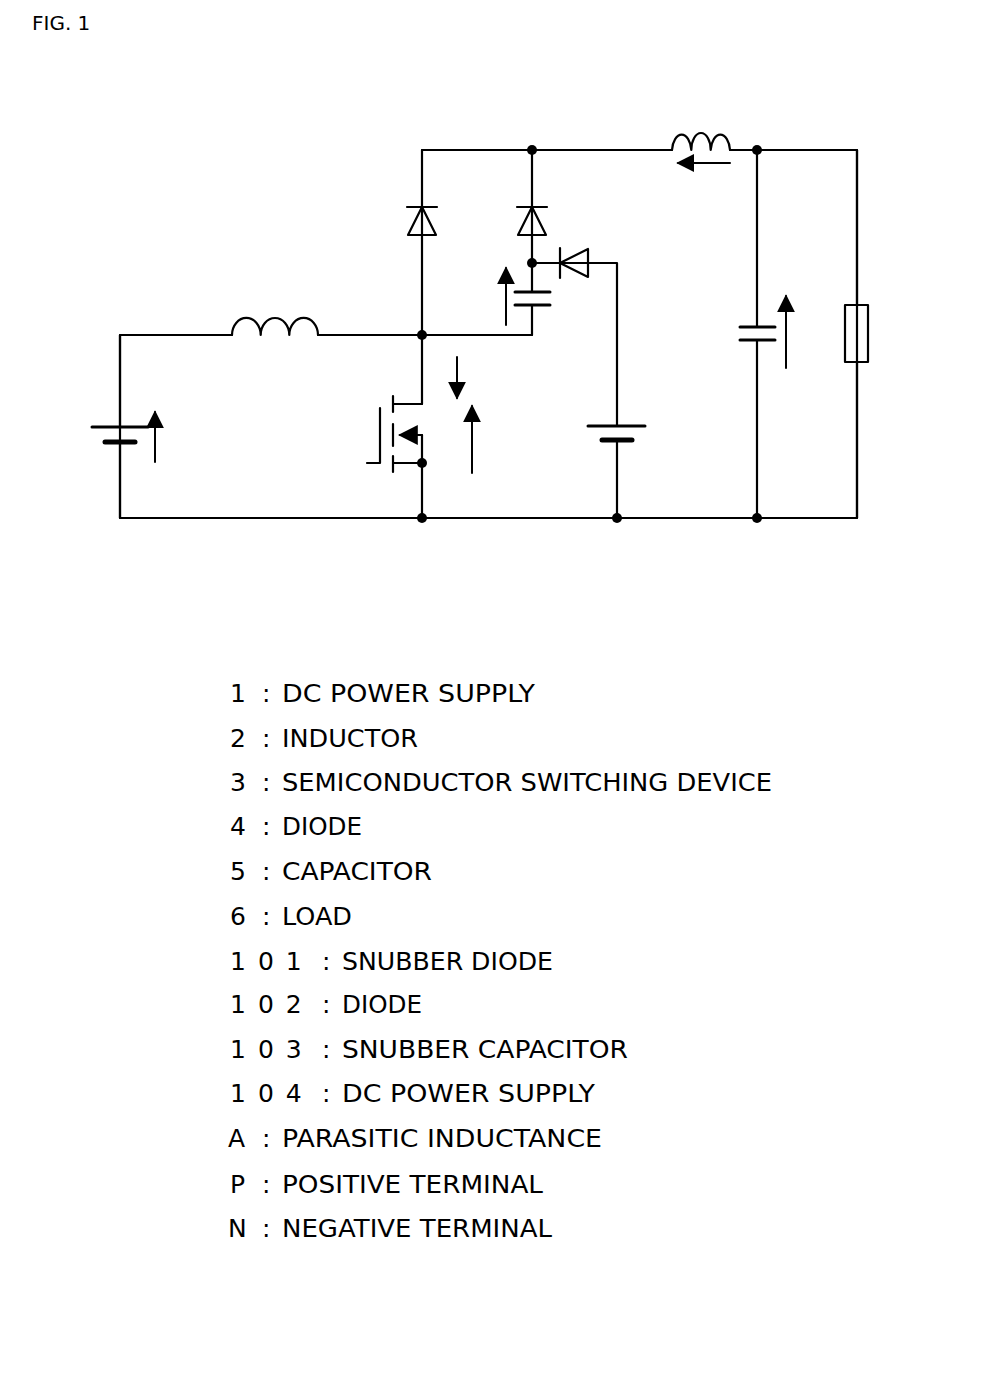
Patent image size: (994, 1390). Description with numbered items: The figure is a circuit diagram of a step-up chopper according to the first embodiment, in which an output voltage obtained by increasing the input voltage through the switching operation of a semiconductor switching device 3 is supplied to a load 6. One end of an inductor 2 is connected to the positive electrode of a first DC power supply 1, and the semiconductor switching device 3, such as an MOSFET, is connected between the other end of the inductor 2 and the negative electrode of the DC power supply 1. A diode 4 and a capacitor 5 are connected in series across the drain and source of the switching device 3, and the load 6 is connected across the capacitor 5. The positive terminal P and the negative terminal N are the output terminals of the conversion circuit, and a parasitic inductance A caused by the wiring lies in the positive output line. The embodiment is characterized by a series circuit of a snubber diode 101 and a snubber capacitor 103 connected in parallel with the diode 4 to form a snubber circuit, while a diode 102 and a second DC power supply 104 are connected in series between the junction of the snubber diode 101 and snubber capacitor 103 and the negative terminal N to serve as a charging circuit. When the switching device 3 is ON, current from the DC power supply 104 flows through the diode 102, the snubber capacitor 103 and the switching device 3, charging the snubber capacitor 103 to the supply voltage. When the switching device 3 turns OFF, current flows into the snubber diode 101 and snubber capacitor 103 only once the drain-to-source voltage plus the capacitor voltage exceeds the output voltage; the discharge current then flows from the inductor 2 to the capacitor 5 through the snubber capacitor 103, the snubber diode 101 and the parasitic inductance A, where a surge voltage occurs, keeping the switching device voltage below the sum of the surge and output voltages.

The DC power supply 1 is at (110, 416).
The inductor 2 is at (281, 314).
The semiconductor switching device 3 is at (405, 393).
The diode 4 is at (413, 205).
The capacitor 5 is at (746, 316).
The load 6 is at (866, 309).
The snubber diode 101 is at (540, 199).
The diode 102 is at (570, 249).
The snubber capacitor 103 is at (540, 313).
The second DC power supply 104 is at (601, 414).
The parasitic inductance A is at (698, 126).
The positive terminal P is at (475, 132).
The negative terminal N is at (419, 540).